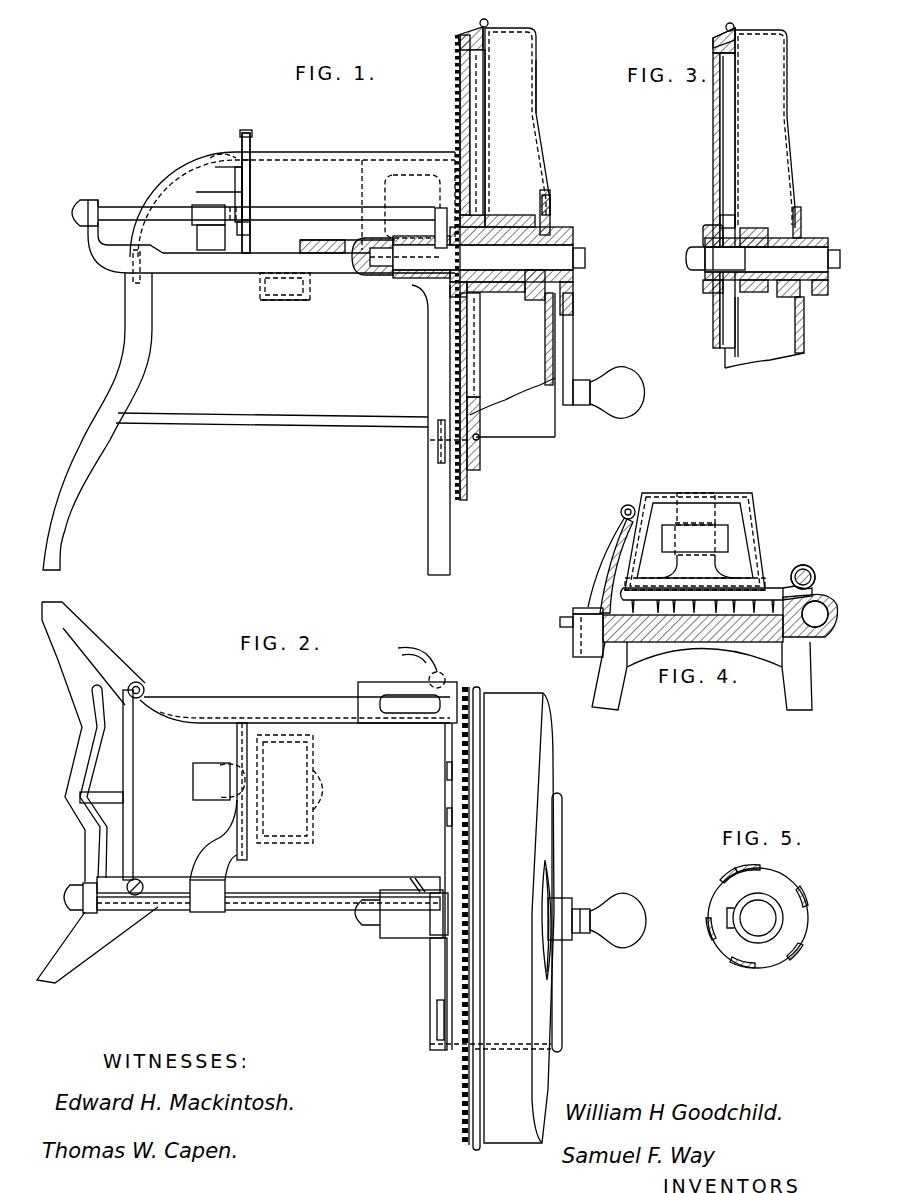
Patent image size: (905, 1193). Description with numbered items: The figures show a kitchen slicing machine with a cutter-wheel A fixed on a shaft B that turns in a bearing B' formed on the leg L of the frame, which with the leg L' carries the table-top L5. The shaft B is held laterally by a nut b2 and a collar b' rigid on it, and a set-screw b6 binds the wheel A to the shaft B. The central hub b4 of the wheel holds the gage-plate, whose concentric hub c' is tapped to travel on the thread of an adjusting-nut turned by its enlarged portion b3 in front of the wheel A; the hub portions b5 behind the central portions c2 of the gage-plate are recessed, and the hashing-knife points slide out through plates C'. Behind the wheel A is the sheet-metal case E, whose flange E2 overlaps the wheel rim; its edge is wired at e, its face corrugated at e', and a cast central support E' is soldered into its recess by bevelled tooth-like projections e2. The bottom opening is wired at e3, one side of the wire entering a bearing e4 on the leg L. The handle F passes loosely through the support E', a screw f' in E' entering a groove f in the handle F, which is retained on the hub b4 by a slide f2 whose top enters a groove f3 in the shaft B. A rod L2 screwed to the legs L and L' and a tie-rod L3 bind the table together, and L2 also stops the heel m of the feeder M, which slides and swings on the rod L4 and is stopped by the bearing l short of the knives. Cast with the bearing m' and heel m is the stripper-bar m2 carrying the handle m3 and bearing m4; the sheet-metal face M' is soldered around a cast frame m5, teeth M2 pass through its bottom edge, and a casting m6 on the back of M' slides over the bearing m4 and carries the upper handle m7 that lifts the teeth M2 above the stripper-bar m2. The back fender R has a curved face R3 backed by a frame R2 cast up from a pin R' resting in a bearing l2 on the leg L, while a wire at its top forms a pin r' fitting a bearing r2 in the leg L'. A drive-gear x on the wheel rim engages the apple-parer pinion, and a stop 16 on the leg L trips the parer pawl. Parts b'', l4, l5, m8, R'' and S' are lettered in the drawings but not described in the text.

In FIG. 1, the cutter-wheel A is at (448, 103).
In FIG. 1, the shaft B is at (477, 257).
In FIG. 3, the shaft B is at (763, 259).
In FIG. 4, the shaft B is at (815, 627).
In FIG. 1, the bearing B' is at (419, 264).
In FIG. 2, the bearing B' is at (411, 914).
In FIG. 1, the collar b' is at (421, 281).
In FIG. 3, the collar b' is at (725, 258).
In FIG. 1, the nut b2 is at (356, 252).
In FIG. 2, the nut b2 is at (366, 923).
In FIG. 2, the enlarged portion of adjusting-nut b3 is at (440, 887).
In FIG. 3, the enlarged portion of adjusting-nut b3 is at (704, 234).
In FIG. 1, the central hub b4 is at (496, 294).
In FIG. 1, the recessed hub portions b5 is at (452, 292).
In FIG. 3, the recessed hub portions b5 is at (754, 229).
In FIG. 1, the set-screw b6 is at (518, 225).
In FIG. 3, the lower collar b'' is at (755, 283).
In FIG. 3, the plates C' is at (714, 188).
In FIG. 3, the concentric hub of gage-plate c' is at (754, 295).
In FIG. 3, the central portions of gage-plate c2 is at (729, 218).
In FIG. 1, the case E is at (512, 234).
In FIG. 2, the case E is at (517, 918).
In FIG. 1, the central support E' is at (537, 212).
In FIG. 5, the central support E' is at (758, 918).
In FIG. 3, the flange E2 is at (764, 190).
In FIG. 1, the wired edge e is at (488, 15).
In FIG. 1, the corrugated face e' is at (548, 93).
In FIG. 1, the tooth-like projections e2 is at (550, 203).
In FIG. 5, the tooth-like projections e2 is at (708, 930).
In FIG. 1, the wire e3 is at (475, 442).
In FIG. 2, the wire e3 is at (482, 1042).
In FIG. 1, the bearing e4 is at (438, 462).
In FIG. 2, the bearing e4 is at (445, 1015).
In FIG. 1, the handle F is at (604, 355).
In FIG. 2, the handle F is at (597, 914).
In FIG. 1, the groove f is at (511, 259).
In FIG. 3, the screw f' is at (802, 296).
In FIG. 1, the slide f2 is at (575, 290).
In FIG. 1, the groove f3 is at (572, 238).
In FIG. 1, the leg L is at (427, 430).
In FIG. 2, the leg L is at (428, 994).
In FIG. 4, the leg L is at (702, 676).
In FIG. 1, the leg L' is at (97, 421).
In FIG. 2, the leg L' is at (97, 792).
In FIG. 1, the rod L2 is at (271, 245).
In FIG. 2, the rod L2 is at (298, 886).
In FIG. 4, the rod L2 is at (784, 586).
In FIG. 1, the tie-rod L3 is at (272, 428).
In FIG. 1, the rod L4 is at (322, 210).
In FIG. 2, the rod L4 is at (252, 899).
In FIG. 4, the rod L4 is at (797, 567).
In FIG. 2, the table-top L5 is at (401, 886).
In FIG. 4, the table-top L5 is at (703, 632).
In FIG. 1, the bearing l is at (436, 219).
In FIG. 2, the bearing l is at (439, 914).
In FIG. 4, the bearing l2 is at (578, 640).
In FIG. 2, the lug l4 is at (452, 818).
In FIG. 2, the lug l5 is at (452, 772).
In FIG. 1, the feeder M is at (236, 187).
In FIG. 2, the feeder M is at (264, 791).
In FIG. 1, the sheet-metal face M' is at (258, 190).
In FIG. 1, the teeth M2 is at (252, 234).
In FIG. 1, the heel m is at (211, 237).
In FIG. 4, the heel m is at (797, 615).
In FIG. 1, the bearing m' is at (208, 215).
In FIG. 2, the bearing m' is at (207, 904).
In FIG. 4, the bearing m' is at (808, 569).
In FIG. 4, the stripper-bar m2 is at (702, 577).
In FIG. 1, the handle m3 is at (219, 194).
In FIG. 2, the handle m3 is at (211, 781).
In FIG. 4, the handle m3 is at (677, 561).
In FIG. 4, the bearing m4 is at (696, 509).
In FIG. 1, the cast-metal frame m5 is at (252, 133).
In FIG. 4, the cast-metal frame m5 is at (752, 526).
In FIG. 2, the casting m6 is at (213, 840).
In FIG. 4, the casting m6 is at (695, 539).
In FIG. 1, the upper handle m7 is at (224, 156).
In FIG. 2, the upper handle m7 is at (232, 780).
In FIG. 4, the upper handle m7 is at (677, 535).
In FIG. 4, the pins m8 is at (703, 606).
In FIG. 1, the back fender R is at (292, 204).
In FIG. 4, the back fender R is at (606, 565).
In FIG. 2, the pin R' is at (436, 680).
In FIG. 2, the frame or backing R2 is at (362, 690).
In FIG. 4, the frame or backing R2 is at (600, 608).
In FIG. 2, the fender face R3 is at (295, 710).
In FIG. 4, the bracket R'' is at (584, 647).
In FIG. 1, the pin r' is at (121, 266).
In FIG. 2, the bearing r2 is at (138, 771).
In FIG. 4, the bearing r2 is at (619, 509).
In FIG. 1, the box S' is at (293, 286).
In FIG. 1, the drive-gear x is at (470, 463).
In FIG. 2, the drive-gear x is at (466, 904).
In FIG. 3, the drive-gear x is at (703, 42).
In FIG. 2, the stop 16 is at (405, 648).